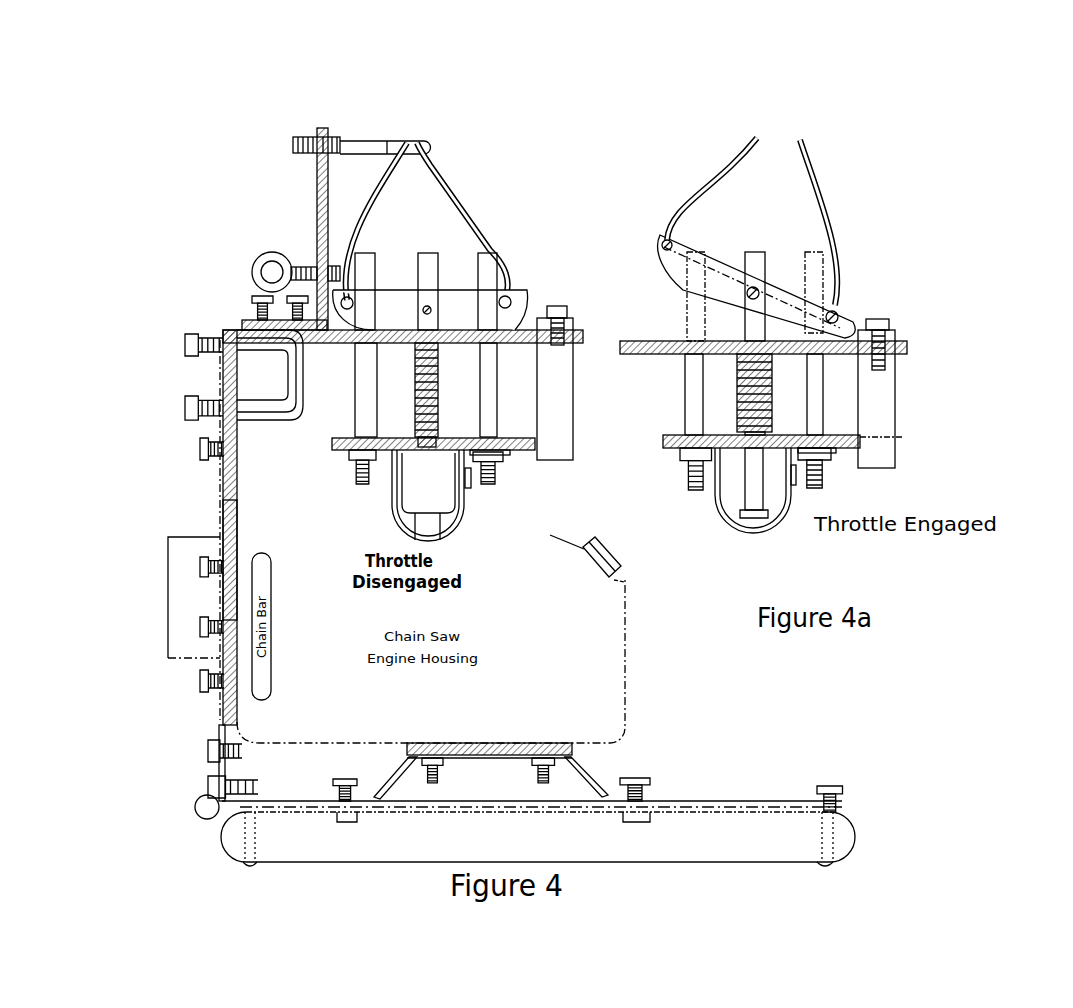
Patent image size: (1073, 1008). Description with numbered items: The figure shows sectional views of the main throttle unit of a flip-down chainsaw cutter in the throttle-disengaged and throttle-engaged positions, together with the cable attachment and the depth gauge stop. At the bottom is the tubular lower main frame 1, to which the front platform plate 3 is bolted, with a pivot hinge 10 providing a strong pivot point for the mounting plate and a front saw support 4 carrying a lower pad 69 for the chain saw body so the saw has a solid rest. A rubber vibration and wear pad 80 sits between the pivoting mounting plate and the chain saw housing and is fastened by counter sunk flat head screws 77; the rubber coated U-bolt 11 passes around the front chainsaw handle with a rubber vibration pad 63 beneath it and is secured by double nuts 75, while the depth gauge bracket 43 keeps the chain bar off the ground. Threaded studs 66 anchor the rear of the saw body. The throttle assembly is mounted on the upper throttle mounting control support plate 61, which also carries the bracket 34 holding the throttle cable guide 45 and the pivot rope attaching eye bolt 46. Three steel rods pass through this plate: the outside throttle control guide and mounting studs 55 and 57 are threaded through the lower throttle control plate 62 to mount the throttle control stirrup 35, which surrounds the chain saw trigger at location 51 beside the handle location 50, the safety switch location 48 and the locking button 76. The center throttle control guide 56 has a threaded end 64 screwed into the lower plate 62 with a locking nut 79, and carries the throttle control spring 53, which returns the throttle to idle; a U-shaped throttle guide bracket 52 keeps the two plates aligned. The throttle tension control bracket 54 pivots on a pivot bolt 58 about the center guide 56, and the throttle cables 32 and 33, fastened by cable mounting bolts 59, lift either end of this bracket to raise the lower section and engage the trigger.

In FIG. 4, the lower main frame 1 is at (849, 815).
In FIG. 4, the front platform plate 3 is at (742, 800).
In FIG. 4, the front saw support 4 is at (594, 768).
In FIG. 4, the pivot hinge 10 is at (200, 802).
In FIG. 4, the U-bolt 11 is at (220, 385).
In FIG. 4, the throttle cable 32 is at (350, 231).
In FIG. 4A, the throttle cable 32 is at (700, 180).
In FIG. 4, the throttle cable 33 is at (458, 213).
In FIG. 4A, the throttle cable 33 is at (842, 252).
In FIG. 4, the bracket 34 is at (308, 207).
In FIG. 4, the throttle control stirrup 35 is at (392, 521).
In FIG. 4A, the throttle control stirrup 35 is at (773, 520).
In FIG. 4, the depth gauge bracket 43 is at (166, 596).
In FIG. 4, the throttle cable guide 45 is at (440, 153).
In FIG. 4, the pivot rope attaching eye bolt 46 is at (252, 263).
In FIG. 4, the location for chain saw handle safety switch 48 is at (478, 464).
In FIG. 4A, the location for chain saw handle safety switch 48 is at (832, 471).
In FIG. 4, the location for chain saw handle 50 is at (441, 487).
In FIG. 4A, the location for chain saw handle 50 is at (750, 483).
In FIG. 4, the location for chain saw trigger 51 is at (430, 527).
In FIG. 4A, the location for chain saw trigger 51 is at (748, 520).
In FIG. 4, the U-shaped throttle guide bracket 52 is at (576, 401).
In FIG. 4A, the U-shaped throttle guide bracket 52 is at (900, 389).
In FIG. 4A, the throttle control spring 53 is at (763, 390).
In FIG. 4A, the throttle tension control bracket 54 is at (806, 278).
In FIG. 4, the throttle control guide and mounting stud 55 is at (487, 258).
In FIG. 4A, the throttle control guide and mounting stud 55 is at (820, 276).
In FIG. 4, the center throttle control guide 56 is at (430, 262).
In FIG. 4A, the center throttle control guide 56 is at (798, 247).
In FIG. 4, the throttle control guide and mounting stud 57 is at (365, 267).
In FIG. 4A, the throttle control guide and mounting stud 57 is at (685, 255).
In FIG. 4A, the pivot bolt 58 is at (760, 294).
In FIG. 4, the cable mounting bolt 59 is at (353, 291).
In FIG. 4A, the cable mounting bolt 59 is at (842, 319).
In FIG. 4, the upper throttle mounting control support plate 61 is at (513, 323).
In FIG. 4A, the upper throttle mounting control support plate 61 is at (908, 349).
In FIG. 4, the lower throttle control plate 62 is at (336, 440).
In FIG. 4A, the lower throttle control plate 62 is at (904, 437).
In FIG. 4, the rubber vibration pad 63 is at (230, 330).
In FIG. 4, the threaded end of center throttle control guide 64 is at (476, 460).
In FIG. 4A, the threaded end of center throttle control guide 64 is at (860, 447).
In FIG. 4, the threaded stud 66 is at (370, 486).
In FIG. 4A, the threaded stud 66 is at (824, 471).
In FIG. 4, the lower pad for chain saw body 69 is at (627, 718).
In FIG. 4, the double nuts 75 is at (200, 404).
In FIG. 4, the chain saw locking button 76 is at (470, 486).
In FIG. 4, the counter sunk flat head screws 77 is at (205, 446).
In FIG. 4, the locking nut 79 is at (430, 440).
In FIG. 4, the rubber vibration and wear pad 80 is at (226, 520).